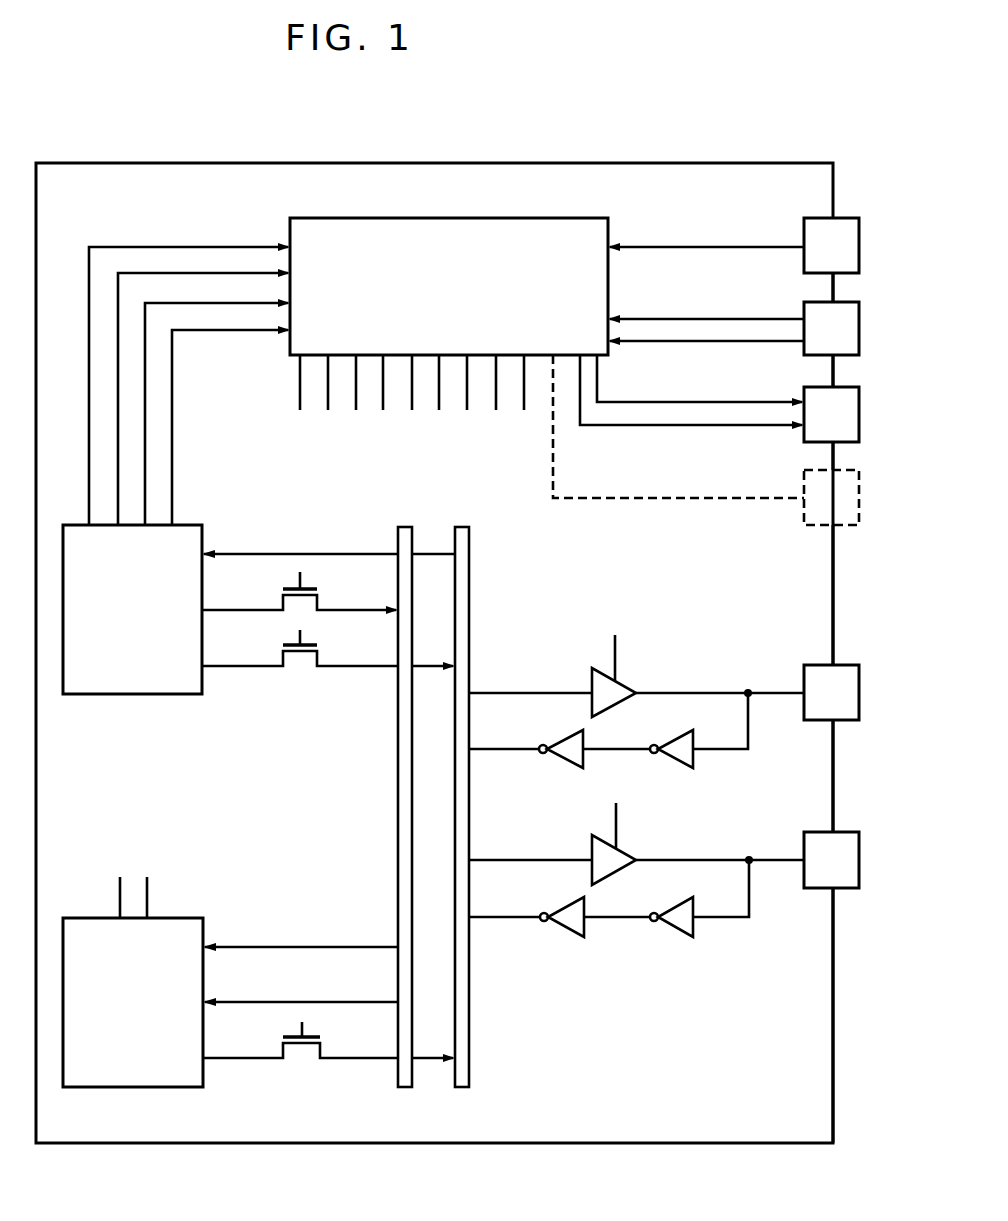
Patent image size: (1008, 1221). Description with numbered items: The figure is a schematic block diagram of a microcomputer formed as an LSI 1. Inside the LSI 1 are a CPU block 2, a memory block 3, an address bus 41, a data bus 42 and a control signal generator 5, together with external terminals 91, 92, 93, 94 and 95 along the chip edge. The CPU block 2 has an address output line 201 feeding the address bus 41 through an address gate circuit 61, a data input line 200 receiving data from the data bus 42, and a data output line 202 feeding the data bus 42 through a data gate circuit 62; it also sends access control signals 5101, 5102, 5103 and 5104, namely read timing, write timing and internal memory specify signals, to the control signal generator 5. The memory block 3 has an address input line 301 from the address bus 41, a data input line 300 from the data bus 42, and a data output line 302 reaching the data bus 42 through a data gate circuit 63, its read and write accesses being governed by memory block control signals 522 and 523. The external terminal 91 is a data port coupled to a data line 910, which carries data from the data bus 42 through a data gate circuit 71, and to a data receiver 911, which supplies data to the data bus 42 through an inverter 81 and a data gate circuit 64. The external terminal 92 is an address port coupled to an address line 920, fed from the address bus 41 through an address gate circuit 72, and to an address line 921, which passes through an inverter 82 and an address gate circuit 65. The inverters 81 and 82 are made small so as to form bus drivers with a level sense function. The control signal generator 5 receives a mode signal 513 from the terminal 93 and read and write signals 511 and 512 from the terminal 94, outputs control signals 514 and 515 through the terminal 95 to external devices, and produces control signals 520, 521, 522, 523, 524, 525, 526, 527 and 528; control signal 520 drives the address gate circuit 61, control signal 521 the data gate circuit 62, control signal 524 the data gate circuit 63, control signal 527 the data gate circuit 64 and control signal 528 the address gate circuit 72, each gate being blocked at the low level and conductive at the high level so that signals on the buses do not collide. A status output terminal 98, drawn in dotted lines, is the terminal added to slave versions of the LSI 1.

The LSI 1 is at (733, 163).
The CPU block 2 is at (128, 695).
The memory block 3 is at (130, 1088).
The control signal generator 5 is at (513, 218).
The address bus (AB) 41 is at (397, 774).
The data bus (DB) 42 is at (470, 595).
The address gate circuit 61 is at (305, 598).
The data gate circuit 62 is at (300, 672).
The data gate circuit 63 is at (298, 1061).
The data gate circuit 64 is at (583, 760).
The address gate circuit 65 is at (584, 930).
The data gate circuit 71 is at (626, 689).
The address gate circuit 72 is at (622, 877).
The inverter 81 is at (693, 760).
The inverter 82 is at (693, 930).
The external terminal (P1) 91 is at (861, 672).
The external terminal (P2) 92 is at (861, 840).
The mode input terminal (P3) 93 is at (875, 205).
The input terminal of the internal memory read/write signal (P4) 94 is at (877, 298).
The output terminal of the external memory read/write signal (P5) 95 is at (877, 381).
The status output terminal 98 is at (861, 497).
The data input line 200 is at (275, 553).
The address output line 201 is at (237, 609).
The data output line 202 is at (243, 667).
The data input line 300 is at (270, 946).
The address input line 301 is at (268, 1001).
The data output line 302 is at (243, 1057).
The access control signal (read timing signal) 5101 is at (110, 246).
The access control signal (write timing signal) 5102 is at (203, 272).
The access control signal (internal memory specify signal) 5103 is at (212, 304).
The access control signal 5104 is at (190, 331).
The read signal 511 is at (672, 318).
The write signal 512 is at (690, 342).
The mode signal 513 is at (670, 246).
The control signal 514 is at (718, 401).
The control signal 515 is at (645, 426).
The control signal 520 is at (318, 575).
The control signal 521 is at (262, 637).
The memory block control signal 522 is at (86, 879).
The memory block control signal 523 is at (148, 890).
The control signal 524 is at (305, 1025).
The control signal 525 is at (535, 949).
The control signal 526 is at (637, 632).
The control signal 527 is at (535, 773).
The control signal 528 is at (630, 820).
The data line 910 is at (498, 692).
The data receiver 911 is at (503, 748).
The address line 920 is at (513, 859).
The address line 921 is at (505, 916).